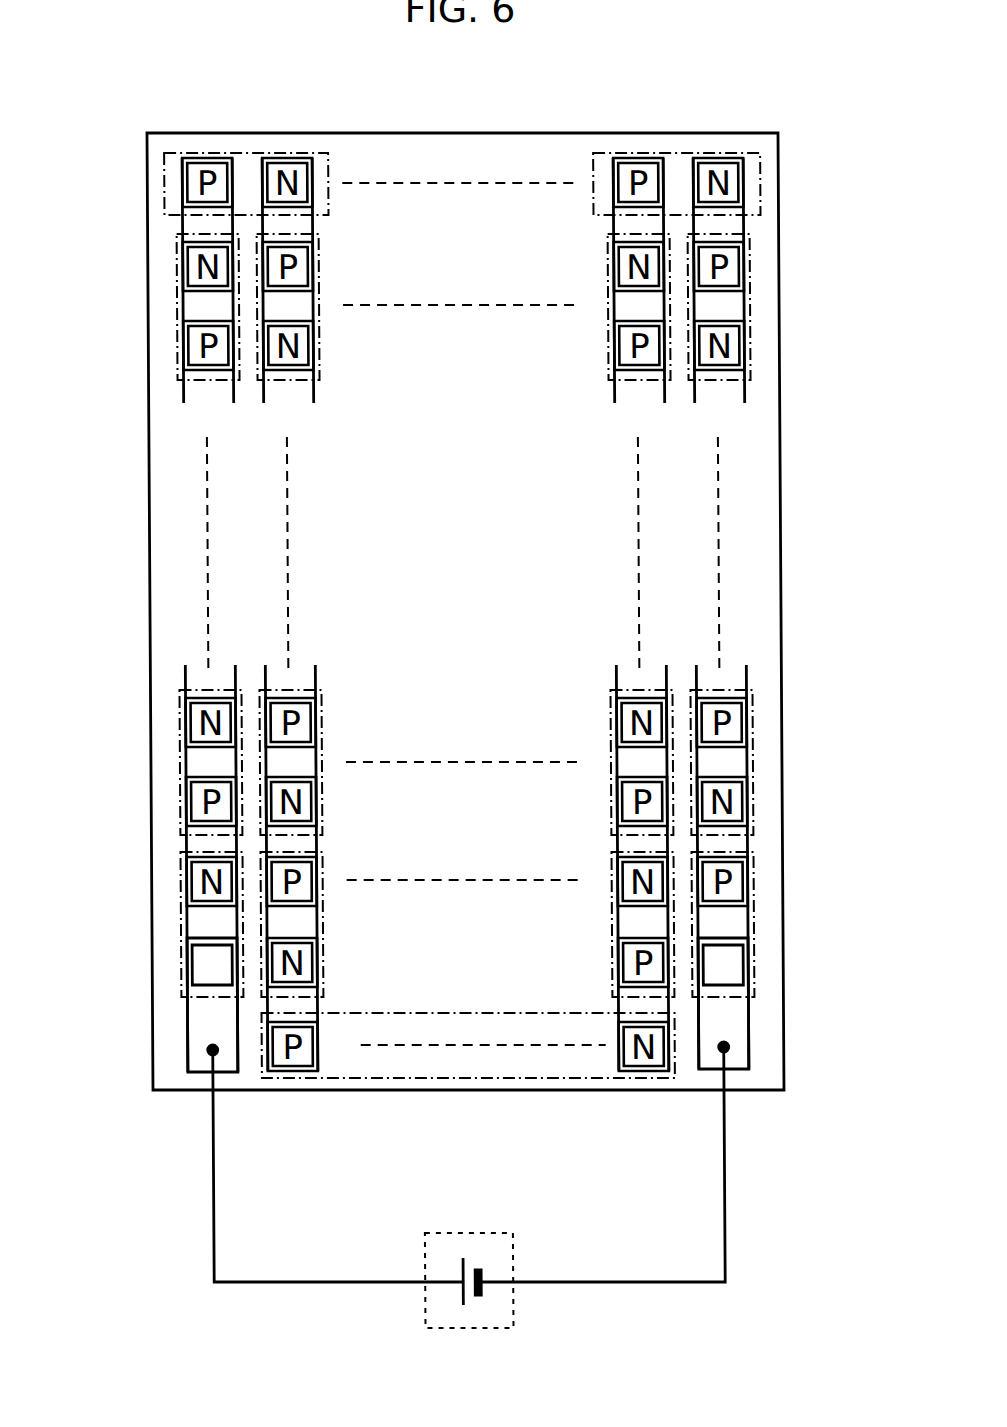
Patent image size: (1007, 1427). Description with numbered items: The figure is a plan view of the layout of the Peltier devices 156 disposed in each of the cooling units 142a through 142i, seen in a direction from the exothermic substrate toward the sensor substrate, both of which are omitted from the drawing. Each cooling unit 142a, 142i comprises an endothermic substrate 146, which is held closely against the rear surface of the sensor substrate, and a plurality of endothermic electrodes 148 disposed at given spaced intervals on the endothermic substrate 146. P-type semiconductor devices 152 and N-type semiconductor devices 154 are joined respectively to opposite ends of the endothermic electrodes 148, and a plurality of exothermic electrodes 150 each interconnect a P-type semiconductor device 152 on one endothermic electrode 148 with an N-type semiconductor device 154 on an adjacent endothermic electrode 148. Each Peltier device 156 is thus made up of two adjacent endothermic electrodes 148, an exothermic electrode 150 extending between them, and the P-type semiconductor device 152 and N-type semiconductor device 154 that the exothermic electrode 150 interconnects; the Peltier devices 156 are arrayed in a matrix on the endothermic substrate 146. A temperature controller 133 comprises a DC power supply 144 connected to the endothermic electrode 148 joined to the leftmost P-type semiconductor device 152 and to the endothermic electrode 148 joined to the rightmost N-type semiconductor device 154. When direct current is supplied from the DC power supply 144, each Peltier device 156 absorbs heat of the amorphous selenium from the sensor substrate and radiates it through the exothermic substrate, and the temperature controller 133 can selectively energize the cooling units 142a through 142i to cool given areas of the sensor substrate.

The temperature controller 133 is at (521, 1308).
The cooling unit 142a is at (611, 534).
The cooling unit 142i is at (715, 117).
The DC power supply 144 is at (470, 1266).
The endothermic substrate 146 is at (193, 462).
The endothermic electrode 148 is at (190, 228).
The exothermic electrode 150 is at (247, 150).
The P-type semiconductor device 152 is at (195, 183).
The N-type semiconductor device 154 is at (195, 270).
The Peltier device 156 is at (199, 129).